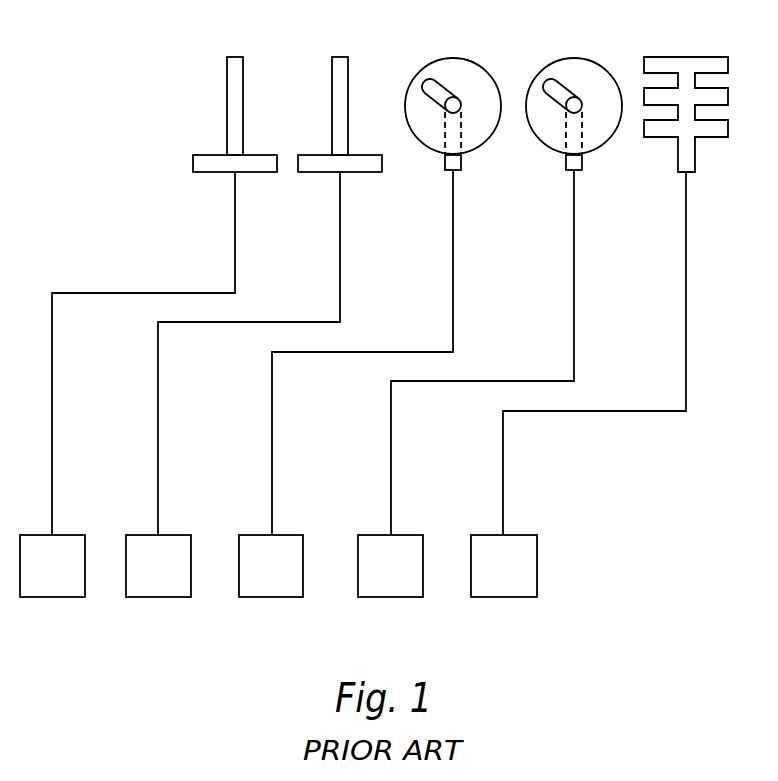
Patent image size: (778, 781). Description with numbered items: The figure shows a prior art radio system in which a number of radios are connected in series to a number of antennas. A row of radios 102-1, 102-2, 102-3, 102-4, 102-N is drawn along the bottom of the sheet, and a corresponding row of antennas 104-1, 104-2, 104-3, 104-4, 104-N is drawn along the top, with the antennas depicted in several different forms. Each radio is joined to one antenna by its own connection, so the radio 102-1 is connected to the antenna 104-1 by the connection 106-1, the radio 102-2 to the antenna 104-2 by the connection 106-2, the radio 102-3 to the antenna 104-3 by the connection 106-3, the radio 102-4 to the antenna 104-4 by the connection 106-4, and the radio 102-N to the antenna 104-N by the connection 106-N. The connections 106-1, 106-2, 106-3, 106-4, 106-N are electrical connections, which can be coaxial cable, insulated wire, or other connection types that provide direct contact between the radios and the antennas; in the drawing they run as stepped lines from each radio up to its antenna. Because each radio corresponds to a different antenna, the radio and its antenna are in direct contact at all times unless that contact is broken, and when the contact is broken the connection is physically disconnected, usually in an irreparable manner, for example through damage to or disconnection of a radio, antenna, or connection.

The radio 102-1 is at (52, 597).
The radio 102-2 is at (158, 597).
The radio 102-3 is at (271, 597).
The radio 102-4 is at (391, 597).
The radio 102-N is at (504, 597).
The antenna 104-1 is at (235, 57).
The antenna 104-2 is at (340, 57).
The antenna 104-3 is at (453, 57).
The antenna 104-4 is at (574, 57).
The antenna 104-N is at (686, 57).
The connection 106-1 is at (53, 472).
The connection 106-2 is at (159, 472).
The connection 106-3 is at (273, 472).
The connection 106-4 is at (392, 472).
The connection 106-N is at (504, 472).